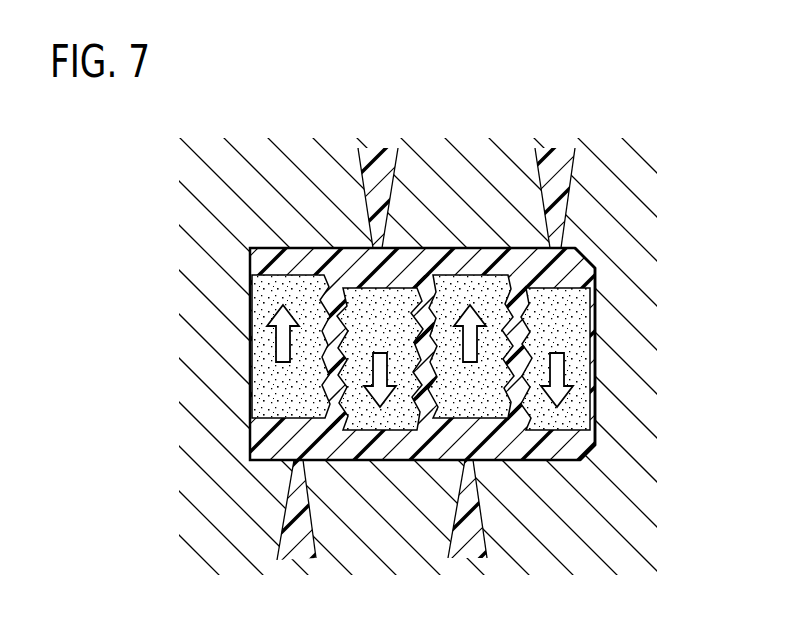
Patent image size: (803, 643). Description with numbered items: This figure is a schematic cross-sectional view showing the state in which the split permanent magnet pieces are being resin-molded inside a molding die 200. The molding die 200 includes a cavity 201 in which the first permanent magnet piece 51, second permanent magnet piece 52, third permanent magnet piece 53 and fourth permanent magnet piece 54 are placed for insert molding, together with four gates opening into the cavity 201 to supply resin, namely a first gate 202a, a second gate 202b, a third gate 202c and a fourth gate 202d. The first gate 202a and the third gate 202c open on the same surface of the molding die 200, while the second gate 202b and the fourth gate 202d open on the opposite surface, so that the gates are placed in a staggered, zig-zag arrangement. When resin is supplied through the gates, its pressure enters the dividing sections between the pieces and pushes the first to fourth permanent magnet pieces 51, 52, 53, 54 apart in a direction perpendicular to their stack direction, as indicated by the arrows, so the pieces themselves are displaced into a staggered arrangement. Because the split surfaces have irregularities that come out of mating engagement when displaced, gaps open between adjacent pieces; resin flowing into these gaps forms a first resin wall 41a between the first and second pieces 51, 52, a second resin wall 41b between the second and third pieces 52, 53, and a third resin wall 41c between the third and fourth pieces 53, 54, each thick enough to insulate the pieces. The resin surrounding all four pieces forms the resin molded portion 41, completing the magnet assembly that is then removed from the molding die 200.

The molding die 200 is at (688, 514).
The cavity 201 is at (582, 271).
The first gate 202a is at (298, 556).
The second gate 202b is at (386, 162).
The third gate 202c is at (473, 556).
The fourth gate 202d is at (560, 162).
The resin molded portion 41 is at (566, 258).
The first resin wall 41a is at (330, 407).
The second resin wall 41b is at (427, 408).
The third resin wall 41c is at (518, 408).
The first permanent magnet piece 51 is at (282, 293).
The second permanent magnet piece 52 is at (381, 416).
The third permanent magnet piece 53 is at (470, 290).
The fourth permanent magnet piece 54 is at (555, 425).